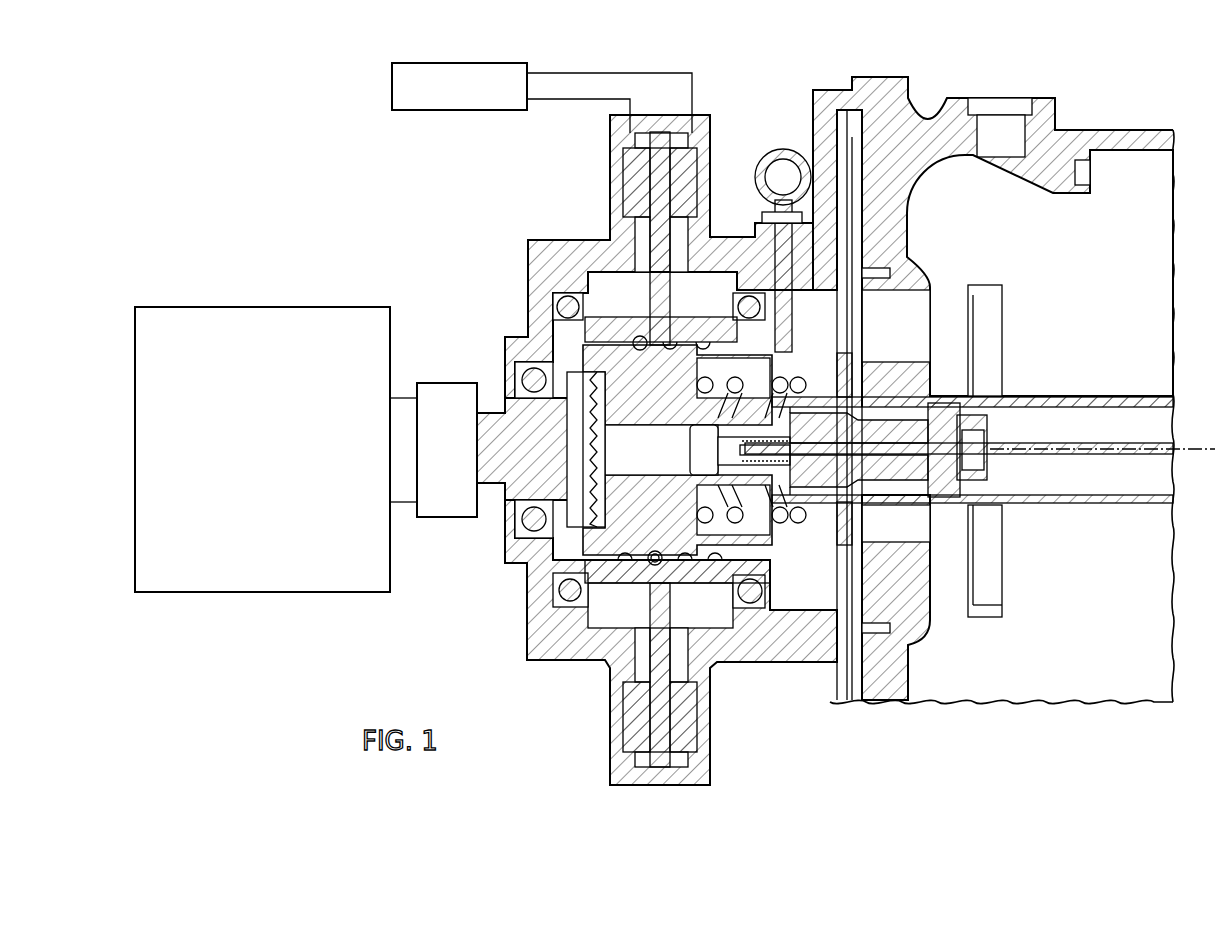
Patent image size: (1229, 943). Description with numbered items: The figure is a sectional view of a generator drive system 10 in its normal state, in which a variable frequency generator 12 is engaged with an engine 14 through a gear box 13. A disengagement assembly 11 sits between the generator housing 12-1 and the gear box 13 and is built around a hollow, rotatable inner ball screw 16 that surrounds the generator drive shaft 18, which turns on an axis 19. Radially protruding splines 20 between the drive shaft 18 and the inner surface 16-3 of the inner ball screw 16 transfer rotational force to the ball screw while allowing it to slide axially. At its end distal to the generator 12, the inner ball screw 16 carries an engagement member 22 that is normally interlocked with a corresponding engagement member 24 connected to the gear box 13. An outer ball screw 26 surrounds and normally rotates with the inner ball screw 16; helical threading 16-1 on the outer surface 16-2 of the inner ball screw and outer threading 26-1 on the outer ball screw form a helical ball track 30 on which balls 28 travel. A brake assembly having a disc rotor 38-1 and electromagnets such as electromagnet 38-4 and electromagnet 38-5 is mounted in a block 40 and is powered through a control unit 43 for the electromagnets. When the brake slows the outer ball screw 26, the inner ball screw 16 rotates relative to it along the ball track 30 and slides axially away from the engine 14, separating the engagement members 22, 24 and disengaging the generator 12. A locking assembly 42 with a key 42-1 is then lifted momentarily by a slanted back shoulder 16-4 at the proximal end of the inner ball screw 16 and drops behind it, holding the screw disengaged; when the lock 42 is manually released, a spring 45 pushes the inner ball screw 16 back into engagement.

The generator drive system 10 is at (398, 190).
The disengagement assembly 11 is at (543, 236).
The variable frequency generator 12 is at (1155, 263).
The housing of generator 12-1 is at (932, 165).
The gear box 13 is at (446, 381).
The engine 14 is at (272, 596).
The inner ball screw 16 is at (635, 396).
The helical threading 16-1 is at (640, 338).
The outer surface of inner ball screw 16-2 is at (560, 320).
The inner surface of inner ball screw 16-3 is at (660, 413).
The slanted back shoulder 16-4 is at (755, 313).
The generator drive shaft 18 is at (918, 417).
The axis 19 is at (1112, 452).
The splines 20 is at (708, 418).
The engagement member 22 is at (594, 509).
The corresponding engagement member 24 is at (583, 465).
The outer ball screw 26 is at (700, 330).
The outer threading 26-1 is at (703, 335).
The balls 28 is at (655, 566).
The helical ball track 30 is at (600, 343).
The disc rotor 38-1 is at (660, 177).
The electromagnet 38-4 is at (688, 722).
The electromagnet 38-5 is at (636, 722).
The electromagnet block 40 is at (660, 113).
The locking assembly 42 is at (788, 318).
The key 42-1 is at (781, 158).
The control unit 43 is at (455, 112).
The spring 45 is at (741, 387).